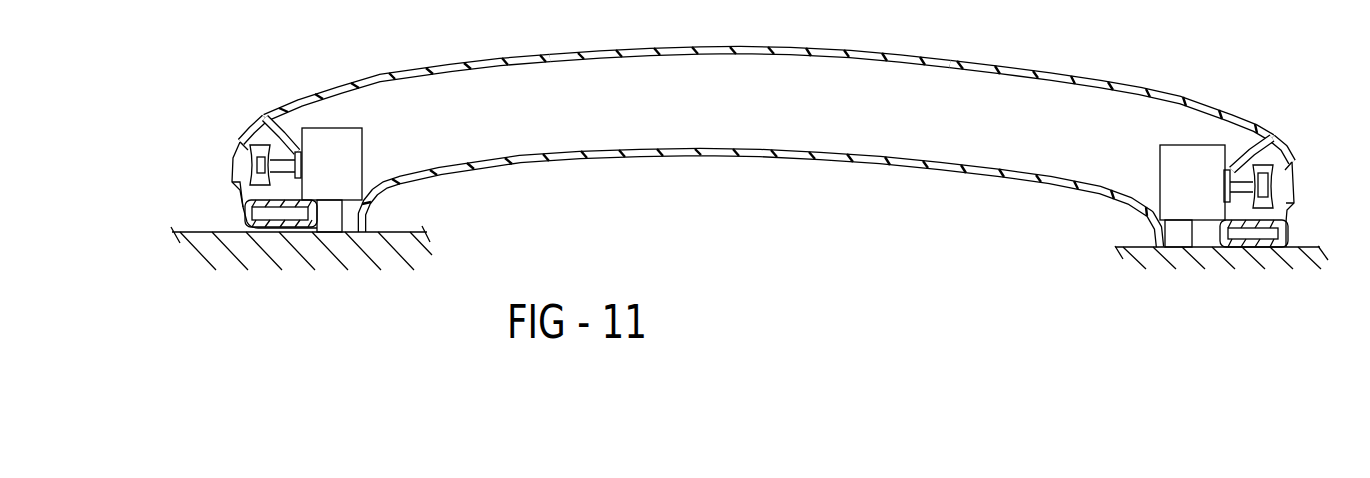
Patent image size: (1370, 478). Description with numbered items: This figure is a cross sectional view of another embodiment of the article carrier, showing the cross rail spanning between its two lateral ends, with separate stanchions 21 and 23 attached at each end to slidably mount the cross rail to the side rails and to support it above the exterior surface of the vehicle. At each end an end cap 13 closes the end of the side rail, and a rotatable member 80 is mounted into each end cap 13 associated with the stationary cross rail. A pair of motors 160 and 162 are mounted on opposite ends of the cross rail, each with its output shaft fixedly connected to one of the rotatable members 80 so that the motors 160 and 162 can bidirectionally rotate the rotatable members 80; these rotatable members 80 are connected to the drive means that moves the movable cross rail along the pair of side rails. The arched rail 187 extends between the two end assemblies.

The end cap 13 is at (236, 158).
The stanchion 21 is at (1165, 92).
The stanchion 23 is at (377, 74).
The rotatable member 80 is at (237, 143).
The motor 160 is at (335, 190).
The motor 162 is at (1192, 220).
The arcuate rail 187 is at (714, 23).